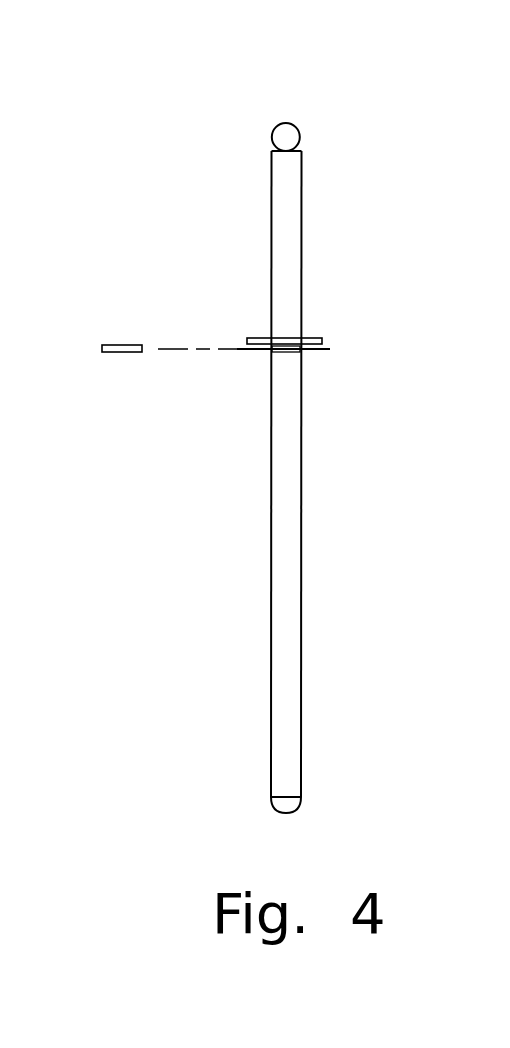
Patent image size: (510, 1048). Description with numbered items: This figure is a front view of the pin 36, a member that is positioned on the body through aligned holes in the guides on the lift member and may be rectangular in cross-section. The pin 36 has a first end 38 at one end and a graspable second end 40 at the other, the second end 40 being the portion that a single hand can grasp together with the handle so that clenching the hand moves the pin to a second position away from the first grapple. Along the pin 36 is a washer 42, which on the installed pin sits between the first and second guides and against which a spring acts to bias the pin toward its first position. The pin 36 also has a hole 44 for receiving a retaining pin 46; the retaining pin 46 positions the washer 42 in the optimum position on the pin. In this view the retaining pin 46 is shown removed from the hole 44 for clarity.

The pin 36 is at (302, 558).
The first end 38 is at (302, 787).
The graspable second end 40 is at (355, 75).
The washer 42 is at (342, 311).
The hole 44 is at (337, 381).
The retaining pin 46 is at (146, 383).